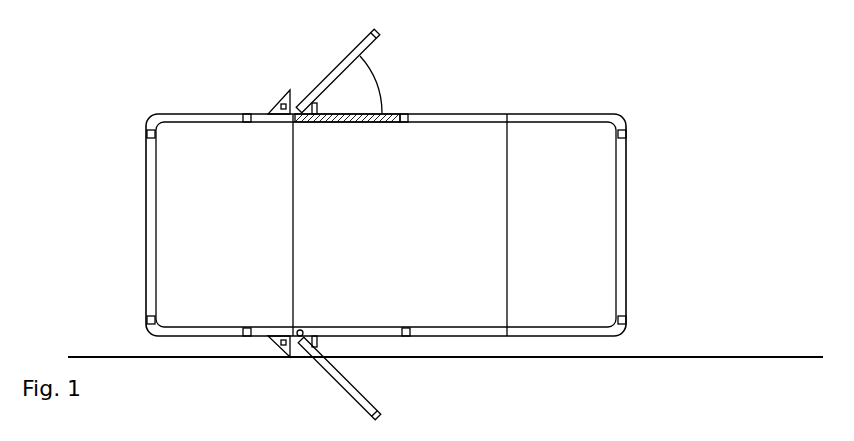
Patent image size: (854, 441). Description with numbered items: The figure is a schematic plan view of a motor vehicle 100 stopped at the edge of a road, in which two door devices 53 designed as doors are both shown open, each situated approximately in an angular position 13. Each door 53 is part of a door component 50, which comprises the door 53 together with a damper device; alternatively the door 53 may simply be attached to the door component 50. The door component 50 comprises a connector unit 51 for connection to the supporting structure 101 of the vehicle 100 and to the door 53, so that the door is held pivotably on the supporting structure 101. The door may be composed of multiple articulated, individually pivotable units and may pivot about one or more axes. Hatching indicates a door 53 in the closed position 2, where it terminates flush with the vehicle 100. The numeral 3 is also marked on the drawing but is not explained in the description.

The motor vehicle 100 is at (120, 91).
The support assembly 3 is at (480, 55).
The angular position 13 is at (380, 80).
The closed position 2 is at (410, 131).
The door device 53 is at (335, 63).
The door component 50 is at (326, 145).
The connector unit 51 is at (303, 333).
The supporting structure 101 is at (358, 338).